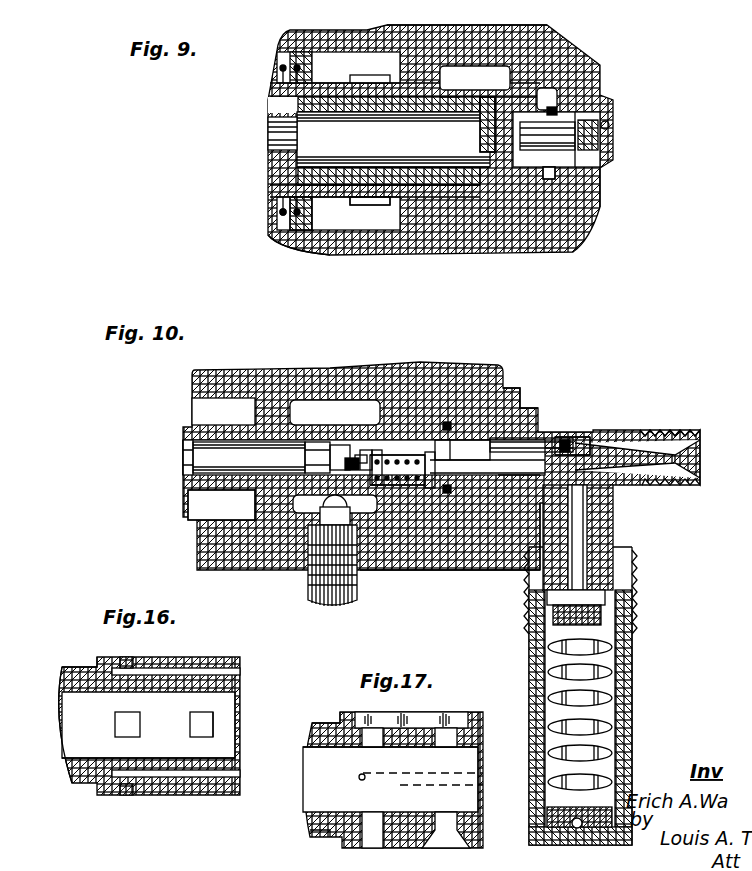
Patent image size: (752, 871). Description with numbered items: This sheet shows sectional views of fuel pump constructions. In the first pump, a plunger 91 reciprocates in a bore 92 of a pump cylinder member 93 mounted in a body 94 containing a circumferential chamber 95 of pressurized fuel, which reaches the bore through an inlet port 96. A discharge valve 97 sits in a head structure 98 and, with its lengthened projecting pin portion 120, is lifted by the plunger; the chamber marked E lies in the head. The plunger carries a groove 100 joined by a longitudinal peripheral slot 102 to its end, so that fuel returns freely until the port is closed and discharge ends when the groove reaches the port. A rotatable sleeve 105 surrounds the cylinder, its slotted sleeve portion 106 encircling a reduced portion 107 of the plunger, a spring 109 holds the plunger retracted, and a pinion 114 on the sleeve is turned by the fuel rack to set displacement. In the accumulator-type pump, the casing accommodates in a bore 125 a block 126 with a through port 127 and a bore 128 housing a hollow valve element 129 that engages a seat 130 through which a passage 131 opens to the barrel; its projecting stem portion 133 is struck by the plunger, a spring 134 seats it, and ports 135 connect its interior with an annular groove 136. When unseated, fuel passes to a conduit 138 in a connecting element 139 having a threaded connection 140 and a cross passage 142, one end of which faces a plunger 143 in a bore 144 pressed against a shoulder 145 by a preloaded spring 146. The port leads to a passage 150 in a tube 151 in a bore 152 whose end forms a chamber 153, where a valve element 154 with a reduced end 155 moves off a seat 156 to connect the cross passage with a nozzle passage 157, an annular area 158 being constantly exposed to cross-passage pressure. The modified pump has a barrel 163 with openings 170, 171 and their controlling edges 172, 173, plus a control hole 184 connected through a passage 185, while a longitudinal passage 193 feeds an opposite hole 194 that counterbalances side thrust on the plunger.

In FIG. 9, the plunger 91 is at (405, 165).
In FIG. 10, the plunger 91 is at (207, 445).
In FIG. 9, the bore 92 is at (425, 170).
In FIG. 10, the bore 92 is at (190, 490).
In FIG. 9, the pump cylinder member 93 is at (444, 112).
In FIG. 10, the pump cylinder member 93 is at (283, 512).
In FIG. 9, the body 94 is at (515, 22).
In FIG. 10, the body 94 is at (416, 560).
In FIG. 9, the chamber 95 is at (494, 208).
In FIG. 9, the inlet port 96 is at (482, 172).
In FIG. 10, the inlet port 96 is at (320, 500).
In FIG. 9, the discharge valve 97 is at (606, 132).
In FIG. 9, the head structure 98 is at (613, 102).
In FIG. 9, the groove 100 is at (488, 114).
In FIG. 9, the longitudinal peripheral slot 102 is at (520, 128).
In FIG. 9, the rotatable sleeve 105 is at (268, 238).
In FIG. 9, the sleeve portion 106 is at (276, 210).
In FIG. 9, the reduced portion 107 is at (268, 146).
In FIG. 9, the spring 109 is at (286, 205).
In FIG. 9, the pinion 114 is at (362, 204).
In FIG. 9, the projecting pin portion 120 is at (545, 112).
In FIG. 9, the chamber E is at (494, 152).
In FIG. 10, the bore 125 is at (405, 460).
In FIG. 10, the block 126 is at (368, 462).
In FIG. 10, the through port 127 is at (400, 445).
In FIG. 10, the bore 128 is at (418, 490).
In FIG. 10, the valve element 129 is at (372, 490).
In FIG. 10, the seat 130 is at (358, 458).
In FIG. 10, the passage 131 is at (350, 460).
In FIG. 10, the projecting stem portion 133 is at (349, 505).
In FIG. 10, the spring 134 is at (430, 503).
In FIG. 10, the ports 135 is at (381, 455).
In FIG. 10, the annular groove 136 is at (359, 545).
In FIG. 10, the conduit 138 is at (533, 480).
In FIG. 10, the connecting element 139 is at (650, 448).
In FIG. 10, the threaded connection 140 is at (688, 431).
In FIG. 10, the cross passage 142 is at (582, 478).
In FIG. 10, the plunger 143 is at (605, 560).
In FIG. 10, the bore 144 is at (618, 540).
In FIG. 10, the shoulder 145 is at (565, 478).
In FIG. 10, the preloaded spring 146 is at (600, 672).
In FIG. 10, the passage 150 is at (480, 443).
In FIG. 10, the tube 151 is at (462, 443).
In FIG. 10, the bore 152 is at (435, 445).
In FIG. 10, the chamber 153 is at (590, 438).
In FIG. 10, the valve element 154 is at (515, 445).
In FIG. 10, the reduced end 155 is at (588, 440).
In FIG. 10, the seat 156 is at (620, 438).
In FIG. 10, the passage 157 is at (650, 442).
In FIG. 10, the annular area 158 is at (575, 438).
In FIG. 16, the barrel 163 is at (183, 638).
In FIG. 17, the barrel 163 is at (332, 698).
In FIG. 16, the opening 170 is at (214, 718).
In FIG. 17, the opening 170 is at (437, 740).
In FIG. 16, the opening 171 is at (133, 727).
In FIG. 17, the opening 171 is at (373, 735).
In FIG. 16, the controlling edge 172 is at (214, 728).
In FIG. 16, the controlling edge 173 is at (115, 723).
In FIG. 16, the control hole 184 is at (123, 757).
In FIG. 17, the control hole 184 is at (365, 777).
In FIG. 16, the passage 185 is at (213, 778).
In FIG. 17, the passage 185 is at (405, 782).
In FIG. 16, the longitudinal passage 193 is at (212, 675).
In FIG. 16, the hole 194 is at (130, 683).